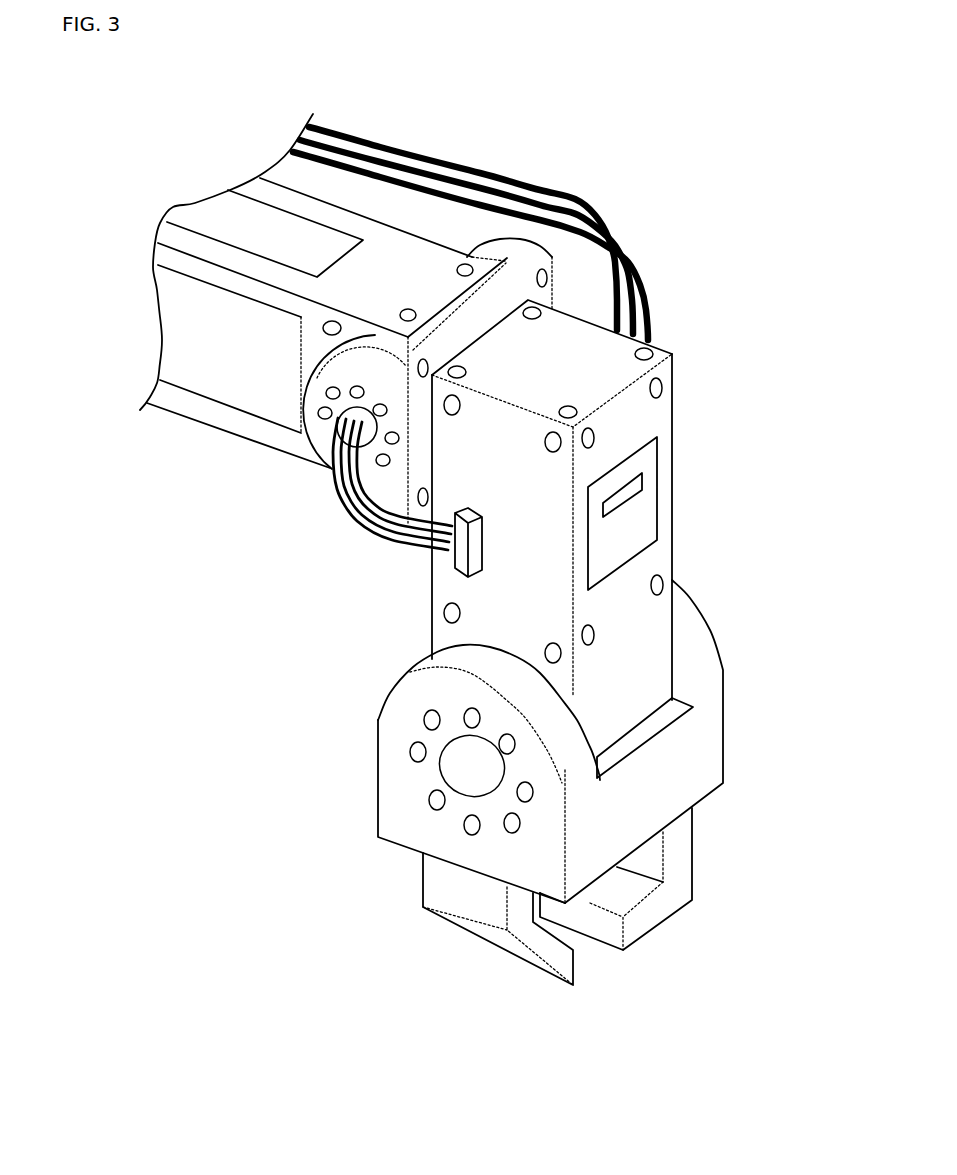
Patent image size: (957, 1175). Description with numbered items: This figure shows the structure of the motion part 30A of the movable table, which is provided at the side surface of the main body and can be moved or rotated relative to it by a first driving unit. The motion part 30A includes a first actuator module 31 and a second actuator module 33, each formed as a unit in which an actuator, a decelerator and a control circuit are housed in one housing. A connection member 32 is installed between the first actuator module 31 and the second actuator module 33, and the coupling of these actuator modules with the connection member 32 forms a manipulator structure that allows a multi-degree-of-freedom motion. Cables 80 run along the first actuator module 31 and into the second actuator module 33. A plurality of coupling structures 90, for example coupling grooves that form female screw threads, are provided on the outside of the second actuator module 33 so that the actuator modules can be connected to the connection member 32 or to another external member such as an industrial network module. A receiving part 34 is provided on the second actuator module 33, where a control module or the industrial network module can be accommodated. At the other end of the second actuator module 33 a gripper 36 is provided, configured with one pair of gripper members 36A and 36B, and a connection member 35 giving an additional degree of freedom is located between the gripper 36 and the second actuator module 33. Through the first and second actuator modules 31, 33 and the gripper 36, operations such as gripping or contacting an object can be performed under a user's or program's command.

The motion part 30A is at (678, 205).
The first actuator module 31 is at (205, 410).
The connection member 32 is at (325, 437).
The second actuator module 33 is at (655, 408).
The receiving part 34 is at (655, 493).
The connection member 35 is at (700, 752).
The gripper 36 is at (622, 902).
The gripper member 36A is at (572, 960).
The gripper member 36B is at (662, 900).
The cables 80 is at (497, 172).
The coupling structures 90 is at (650, 342).